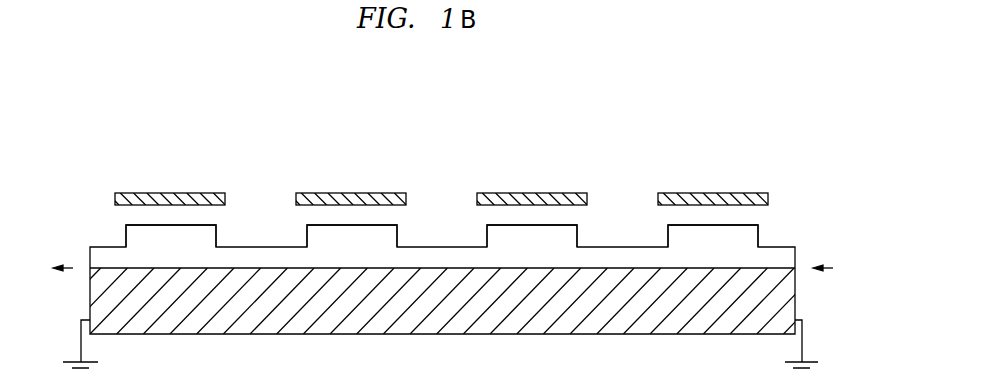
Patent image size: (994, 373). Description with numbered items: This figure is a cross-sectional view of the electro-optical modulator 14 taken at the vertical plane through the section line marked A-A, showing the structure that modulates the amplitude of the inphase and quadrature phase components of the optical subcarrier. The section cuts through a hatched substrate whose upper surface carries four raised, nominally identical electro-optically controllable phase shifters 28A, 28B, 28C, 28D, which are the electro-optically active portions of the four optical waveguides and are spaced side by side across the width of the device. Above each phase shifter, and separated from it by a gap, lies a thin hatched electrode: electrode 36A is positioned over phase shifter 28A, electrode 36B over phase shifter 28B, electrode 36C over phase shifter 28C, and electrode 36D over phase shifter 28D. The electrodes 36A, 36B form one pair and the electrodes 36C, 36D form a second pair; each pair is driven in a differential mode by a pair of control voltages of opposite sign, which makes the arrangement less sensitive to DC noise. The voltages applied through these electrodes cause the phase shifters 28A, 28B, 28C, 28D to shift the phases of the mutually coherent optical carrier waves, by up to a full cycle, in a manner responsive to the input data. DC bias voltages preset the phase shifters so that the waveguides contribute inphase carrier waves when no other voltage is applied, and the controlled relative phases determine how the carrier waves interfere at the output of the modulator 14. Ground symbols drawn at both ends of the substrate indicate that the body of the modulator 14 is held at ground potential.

The electro-optical modulator 14 is at (661, 122).
The electro-optically controllable phase shifter 28A is at (734, 258).
The electro-optically controllable phase shifter 28B is at (551, 258).
The electro-optically controllable phase shifter 28C is at (368, 258).
The electro-optically controllable phase shifter 28D is at (187, 258).
The electrode 36A is at (741, 193).
The electrode 36B is at (559, 193).
The electrode 36C is at (377, 193).
The electrode 36D is at (199, 193).